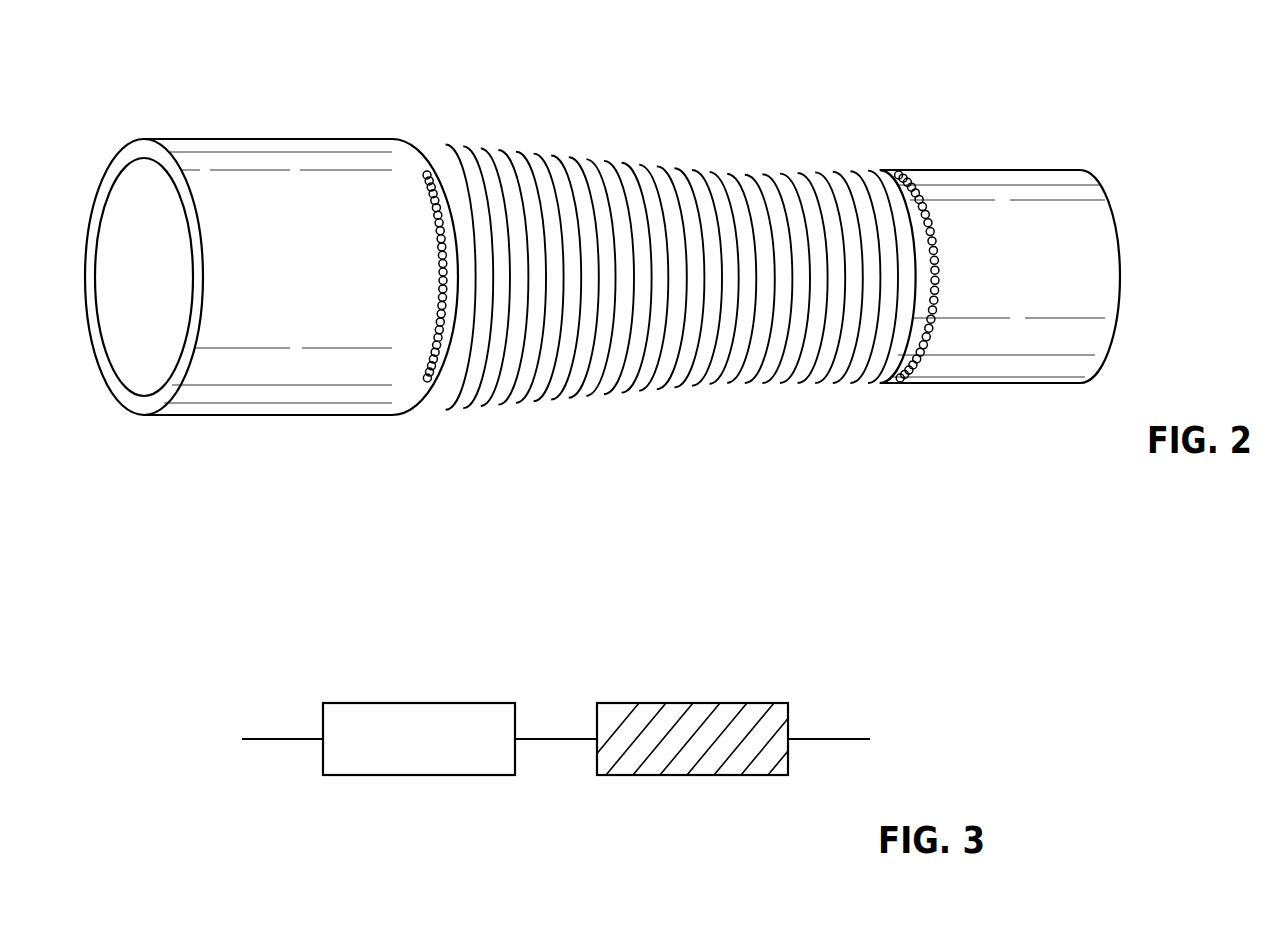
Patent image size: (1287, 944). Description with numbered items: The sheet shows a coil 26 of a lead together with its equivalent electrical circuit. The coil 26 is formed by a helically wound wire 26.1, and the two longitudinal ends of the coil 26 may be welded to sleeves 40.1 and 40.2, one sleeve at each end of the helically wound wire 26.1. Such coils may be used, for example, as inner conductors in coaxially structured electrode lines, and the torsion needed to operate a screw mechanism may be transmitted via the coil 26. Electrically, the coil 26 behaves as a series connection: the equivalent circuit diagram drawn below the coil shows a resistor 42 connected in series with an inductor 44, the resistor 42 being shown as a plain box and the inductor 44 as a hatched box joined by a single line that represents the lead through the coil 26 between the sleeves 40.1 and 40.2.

In FIG. 2, the coil 26 is at (716, 125).
In FIG. 2, the helically wound wire 26.1 is at (501, 158).
In FIG. 2, the sleeve 40.1 is at (224, 150).
In FIG. 2, the sleeve 40.2 is at (1016, 180).
In FIG. 3, the resistor 42 is at (420, 776).
In FIG. 3, the inductor 44 is at (693, 776).